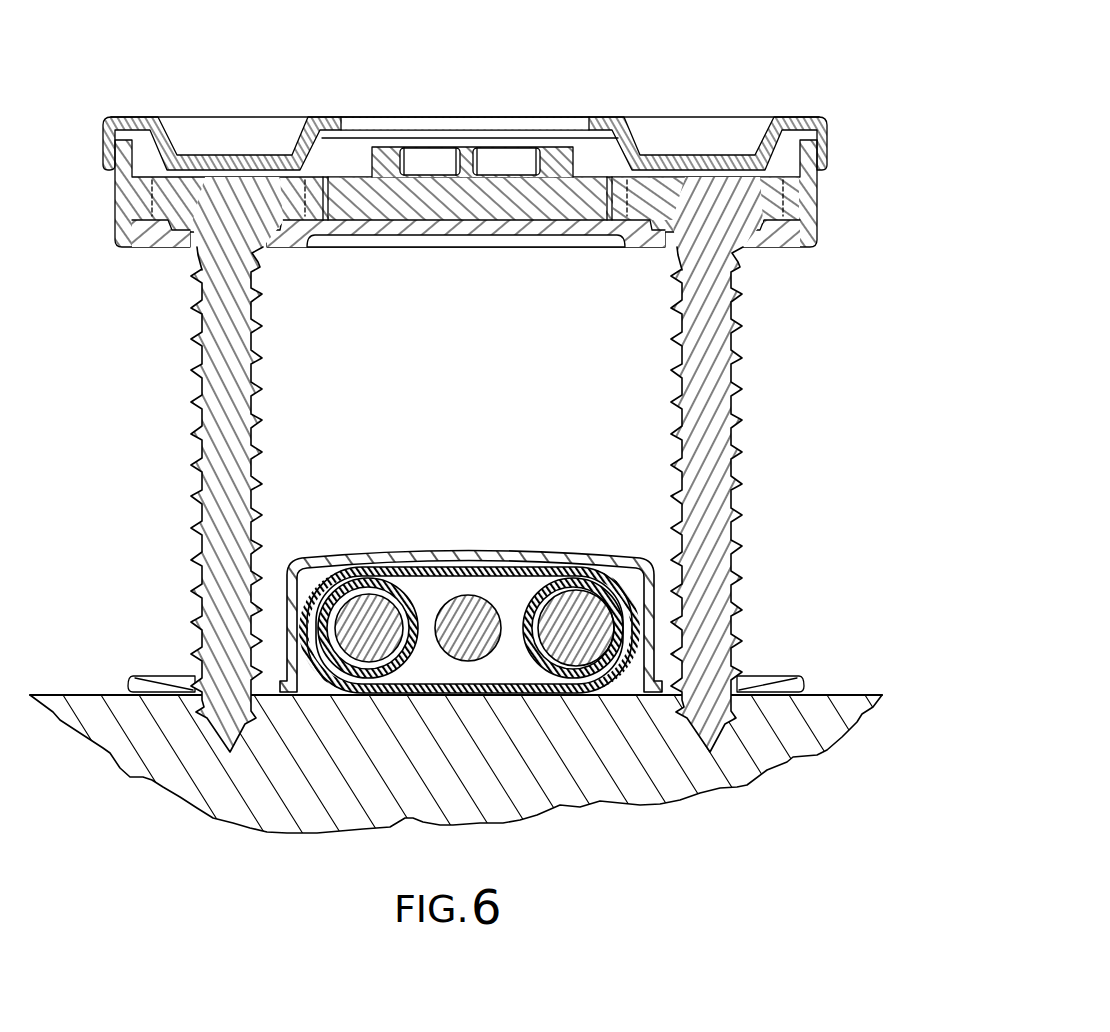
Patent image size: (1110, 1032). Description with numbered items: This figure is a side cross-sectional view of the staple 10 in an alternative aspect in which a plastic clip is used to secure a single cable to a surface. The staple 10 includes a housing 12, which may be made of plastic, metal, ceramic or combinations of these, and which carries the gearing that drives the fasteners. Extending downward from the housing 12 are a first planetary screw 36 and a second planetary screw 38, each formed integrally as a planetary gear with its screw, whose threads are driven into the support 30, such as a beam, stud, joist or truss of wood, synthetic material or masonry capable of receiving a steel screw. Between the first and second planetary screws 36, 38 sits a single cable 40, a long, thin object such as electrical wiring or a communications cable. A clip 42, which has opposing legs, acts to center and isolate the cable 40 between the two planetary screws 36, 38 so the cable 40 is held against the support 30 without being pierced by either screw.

The staple 10 is at (705, 40).
The housing 12 is at (103, 143).
The support 30 is at (830, 695).
The first planetary screw 36 is at (197, 400).
The second planetary screw 38 is at (735, 400).
The cable 40 is at (323, 587).
The clip 42 is at (528, 548).